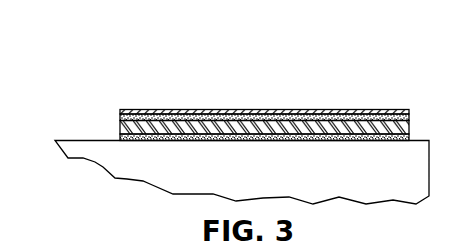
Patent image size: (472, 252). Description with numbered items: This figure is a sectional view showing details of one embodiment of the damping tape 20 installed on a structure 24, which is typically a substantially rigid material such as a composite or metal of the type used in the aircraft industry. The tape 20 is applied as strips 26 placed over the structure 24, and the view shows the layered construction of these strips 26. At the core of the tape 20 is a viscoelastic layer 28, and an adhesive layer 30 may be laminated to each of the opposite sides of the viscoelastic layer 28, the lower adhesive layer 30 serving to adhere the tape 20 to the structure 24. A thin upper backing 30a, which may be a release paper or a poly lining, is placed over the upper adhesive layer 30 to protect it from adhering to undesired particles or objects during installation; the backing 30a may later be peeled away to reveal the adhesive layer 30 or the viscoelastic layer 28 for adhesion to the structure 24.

The tape 20 is at (393, 68).
The structure 24 is at (143, 166).
The strips 26 is at (265, 107).
The viscoelastic layer 28 is at (120, 130).
The adhesive layer 30 is at (118, 117).
The upper backing 30a is at (120, 112).